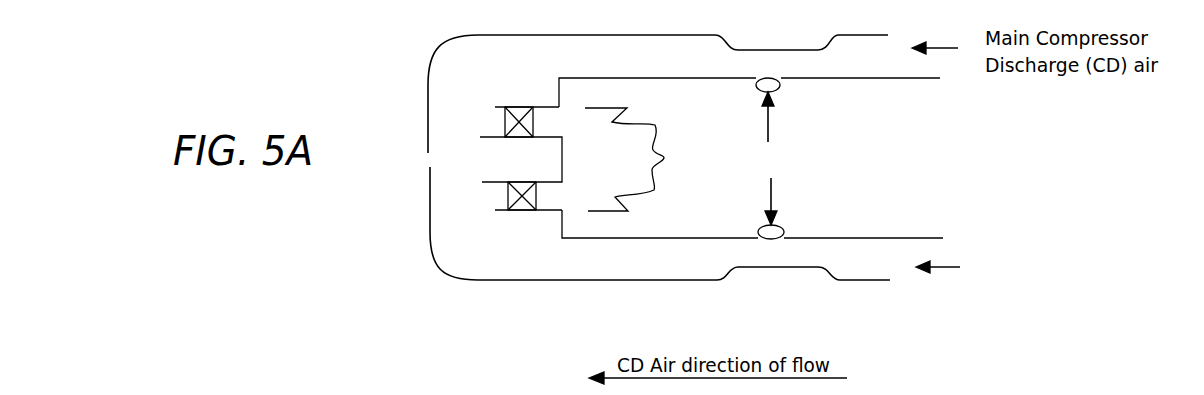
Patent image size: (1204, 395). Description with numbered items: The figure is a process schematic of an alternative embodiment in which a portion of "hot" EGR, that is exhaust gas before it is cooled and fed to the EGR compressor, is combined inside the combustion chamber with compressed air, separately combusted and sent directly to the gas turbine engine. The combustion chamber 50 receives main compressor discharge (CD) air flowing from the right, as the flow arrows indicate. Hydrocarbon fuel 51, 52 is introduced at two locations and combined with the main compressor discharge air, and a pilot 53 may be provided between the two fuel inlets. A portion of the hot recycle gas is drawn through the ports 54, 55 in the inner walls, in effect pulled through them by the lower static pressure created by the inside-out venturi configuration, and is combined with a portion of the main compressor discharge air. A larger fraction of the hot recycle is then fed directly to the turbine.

The compressor discharge air duct 50 is at (868, 291).
The hydrocarbon fuel 51 is at (520, 108).
The hydrocarbon fuel 52 is at (523, 212).
The pilot 53 is at (490, 158).
The port 54 is at (780, 88).
The port 55 is at (783, 229).